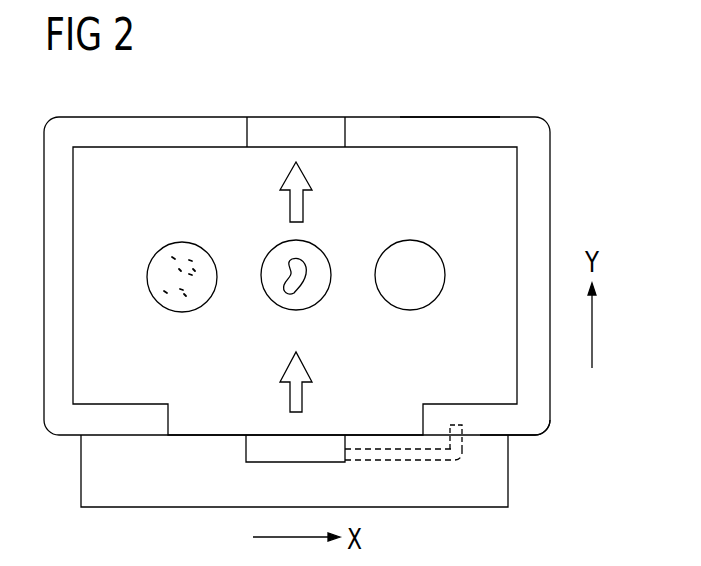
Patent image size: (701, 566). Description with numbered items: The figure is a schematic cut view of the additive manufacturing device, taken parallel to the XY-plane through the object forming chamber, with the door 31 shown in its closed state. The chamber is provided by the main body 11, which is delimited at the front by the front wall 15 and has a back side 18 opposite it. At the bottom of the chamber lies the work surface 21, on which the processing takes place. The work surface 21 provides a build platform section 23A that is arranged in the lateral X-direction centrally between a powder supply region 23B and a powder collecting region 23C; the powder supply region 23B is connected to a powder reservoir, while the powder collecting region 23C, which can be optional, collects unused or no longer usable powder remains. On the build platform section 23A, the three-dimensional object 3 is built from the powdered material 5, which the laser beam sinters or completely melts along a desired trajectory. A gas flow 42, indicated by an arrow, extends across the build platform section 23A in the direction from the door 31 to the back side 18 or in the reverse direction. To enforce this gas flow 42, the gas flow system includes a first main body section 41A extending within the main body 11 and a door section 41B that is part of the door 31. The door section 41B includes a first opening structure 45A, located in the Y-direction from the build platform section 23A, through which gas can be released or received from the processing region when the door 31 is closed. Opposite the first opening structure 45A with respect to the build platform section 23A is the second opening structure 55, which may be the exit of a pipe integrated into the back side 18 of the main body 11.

The main body 11 is at (551, 200).
The work surface 21 is at (500, 178).
The back side 18 is at (456, 108).
The front wall 15 is at (525, 437).
The second opening structure 55 is at (300, 128).
The first opening structure 45A is at (320, 445).
The door 31 is at (510, 506).
The first main body section 41A is at (453, 416).
The door section 41B is at (410, 472).
The build platform section 23A is at (310, 256).
The powder supply region 23B is at (170, 250).
The powder collecting region 23C is at (425, 258).
The powdered material 5 is at (156, 262).
The three-dimensional object 3 is at (305, 291).
The gas flow 42 is at (292, 212).